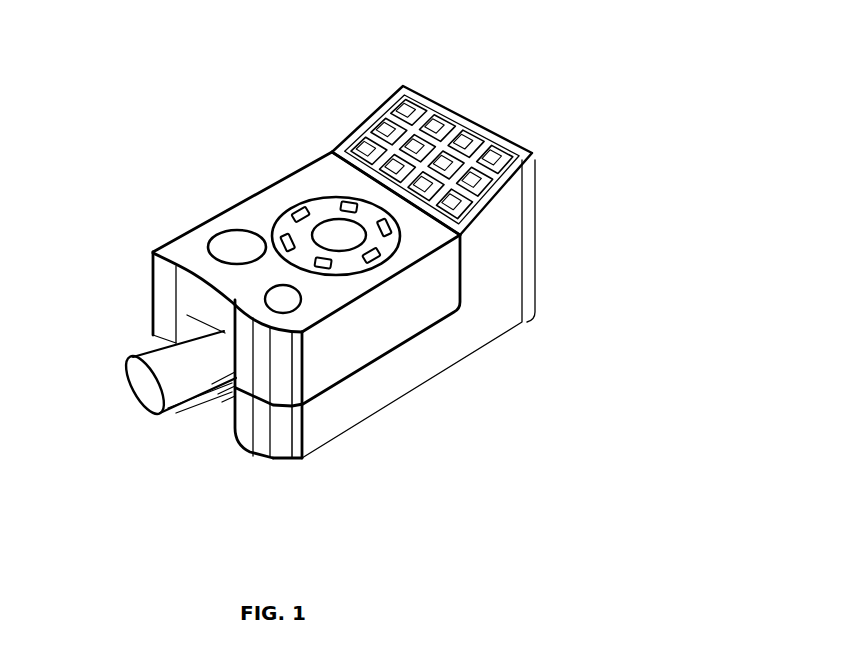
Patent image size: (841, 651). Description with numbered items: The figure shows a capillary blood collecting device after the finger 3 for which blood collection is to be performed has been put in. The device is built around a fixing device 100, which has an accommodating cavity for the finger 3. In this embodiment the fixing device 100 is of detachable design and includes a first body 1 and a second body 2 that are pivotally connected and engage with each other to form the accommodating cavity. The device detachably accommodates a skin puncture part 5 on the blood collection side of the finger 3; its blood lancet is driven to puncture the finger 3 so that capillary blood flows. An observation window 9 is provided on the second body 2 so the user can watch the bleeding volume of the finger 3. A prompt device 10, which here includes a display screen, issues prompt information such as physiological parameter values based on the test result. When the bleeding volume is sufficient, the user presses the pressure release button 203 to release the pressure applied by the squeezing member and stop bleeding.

The first body 1 is at (442, 347).
The second body 2 is at (190, 298).
The finger 3 is at (160, 362).
The skin puncture part 5 is at (313, 197).
The observation window 9 is at (233, 240).
The prompt device 10 is at (390, 120).
The pressure release button 203 is at (283, 299).
The fixing device 100 is at (328, 468).